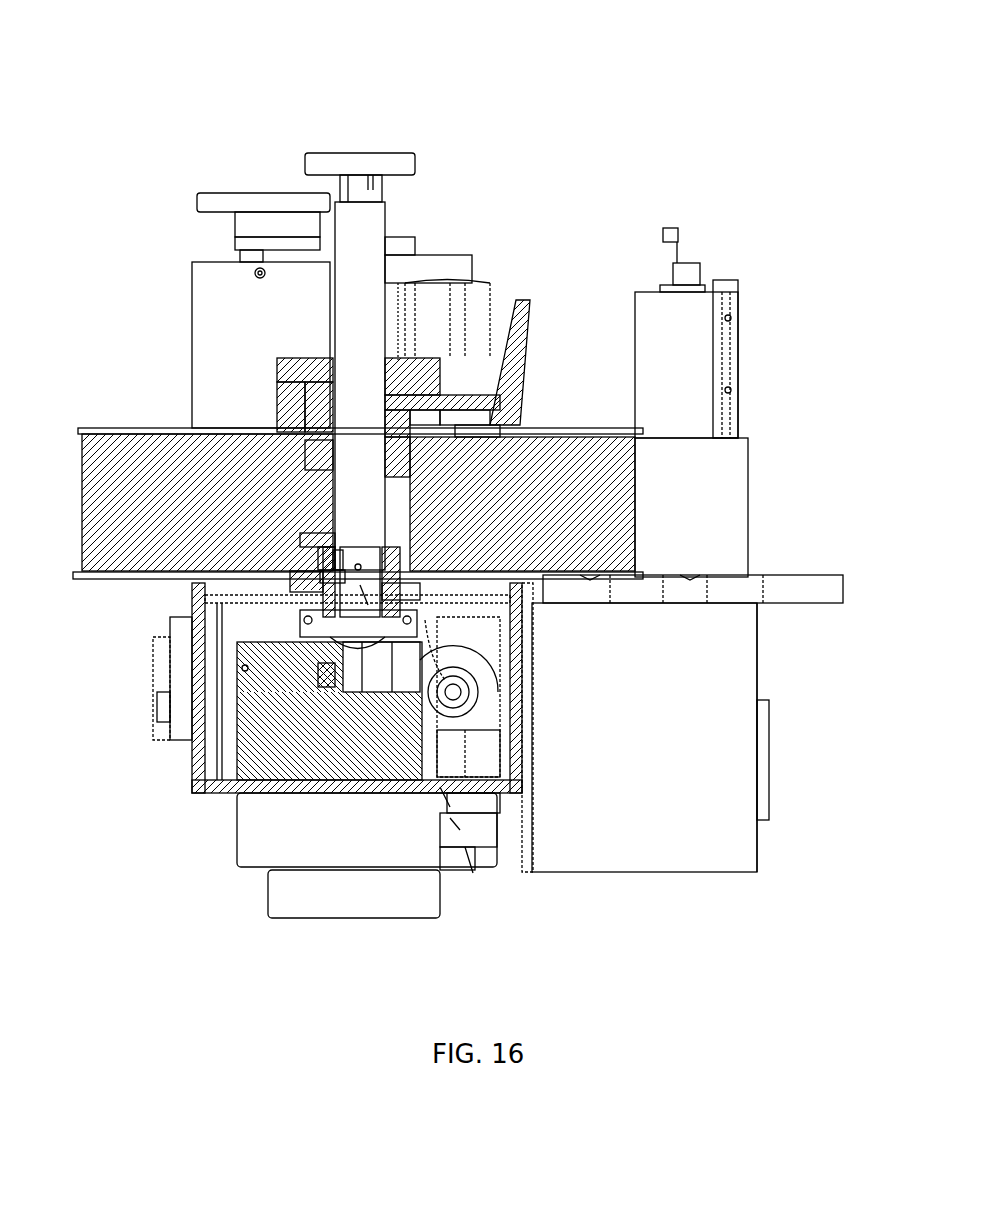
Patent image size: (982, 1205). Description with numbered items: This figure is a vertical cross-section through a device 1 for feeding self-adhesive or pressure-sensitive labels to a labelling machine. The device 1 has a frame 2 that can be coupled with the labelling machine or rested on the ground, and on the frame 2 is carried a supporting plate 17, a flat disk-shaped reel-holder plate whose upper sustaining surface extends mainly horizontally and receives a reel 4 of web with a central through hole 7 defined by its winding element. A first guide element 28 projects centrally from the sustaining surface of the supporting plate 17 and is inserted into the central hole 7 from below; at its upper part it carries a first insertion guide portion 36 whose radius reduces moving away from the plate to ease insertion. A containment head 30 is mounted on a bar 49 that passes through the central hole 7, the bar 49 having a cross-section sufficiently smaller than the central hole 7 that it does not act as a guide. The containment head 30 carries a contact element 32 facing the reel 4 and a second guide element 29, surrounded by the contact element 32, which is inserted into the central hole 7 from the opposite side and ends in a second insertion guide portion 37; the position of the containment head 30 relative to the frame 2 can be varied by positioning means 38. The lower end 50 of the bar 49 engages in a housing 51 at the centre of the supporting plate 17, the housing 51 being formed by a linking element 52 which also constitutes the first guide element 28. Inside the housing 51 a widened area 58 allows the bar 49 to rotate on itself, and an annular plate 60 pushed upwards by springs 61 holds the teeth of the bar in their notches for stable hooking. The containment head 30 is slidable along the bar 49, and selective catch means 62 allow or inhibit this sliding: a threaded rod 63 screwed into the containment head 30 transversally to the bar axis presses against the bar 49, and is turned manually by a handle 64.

The device 1 is at (160, 138).
The frame 2 is at (193, 743).
The reel 4 is at (568, 516).
The central through hole 7 is at (307, 545).
The supporting plate 17 is at (578, 578).
The first guide element 28 is at (490, 407).
The second guide element 29 is at (393, 457).
The containment head 30 is at (267, 387).
The contact element 32 is at (622, 430).
The first insertion guide portion 36 is at (325, 558).
The second insertion guide portion 37 is at (307, 460).
The positioning means 38 is at (450, 380).
The bar 49 is at (363, 255).
The lower end 50 is at (357, 597).
The housing 51 is at (472, 875).
The linking element 52 is at (325, 572).
The widened area 58 is at (337, 562).
The annular plate 60 is at (390, 570).
The springs 61 is at (390, 585).
The selective catch means 62 is at (398, 388).
The threaded rod 63 is at (443, 403).
The handle 64 is at (390, 547).